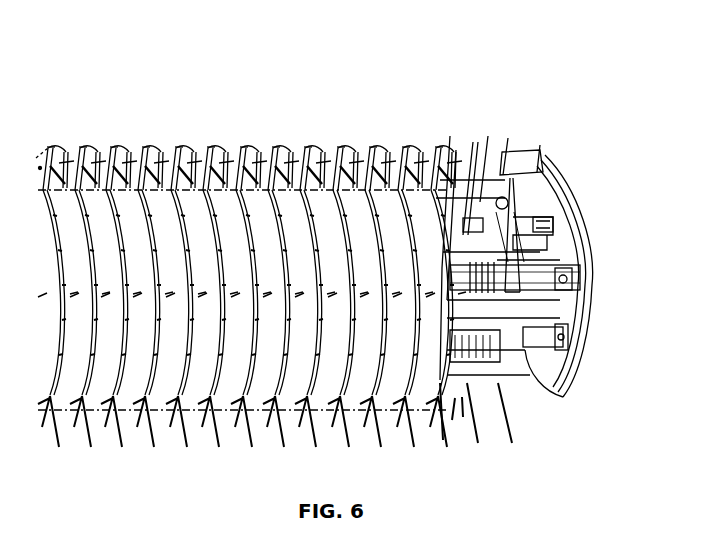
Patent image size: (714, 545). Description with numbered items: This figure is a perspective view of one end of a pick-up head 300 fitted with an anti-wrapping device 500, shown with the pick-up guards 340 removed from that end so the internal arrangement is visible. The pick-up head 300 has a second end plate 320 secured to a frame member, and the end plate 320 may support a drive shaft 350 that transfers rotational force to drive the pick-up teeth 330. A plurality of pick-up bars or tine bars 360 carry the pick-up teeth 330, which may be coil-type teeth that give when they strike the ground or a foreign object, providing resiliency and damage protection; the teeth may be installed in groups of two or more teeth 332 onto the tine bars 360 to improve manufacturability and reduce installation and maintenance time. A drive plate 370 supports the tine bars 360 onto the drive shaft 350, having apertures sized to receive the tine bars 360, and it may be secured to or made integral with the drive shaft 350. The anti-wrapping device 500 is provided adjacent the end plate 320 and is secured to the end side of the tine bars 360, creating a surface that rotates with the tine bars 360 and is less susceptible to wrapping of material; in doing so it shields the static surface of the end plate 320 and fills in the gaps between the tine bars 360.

The pick-up head 300 is at (307, 104).
The second end plate 320 is at (547, 173).
The pick-up teeth 330 is at (124, 452).
The groups of two or more teeth 332 is at (512, 445).
The pick-up guards 340 is at (168, 233).
The drive shaft 350 is at (468, 263).
The tine bars 360 is at (553, 228).
The drive plate 370 is at (520, 253).
The anti-wrapping device 500 is at (557, 378).